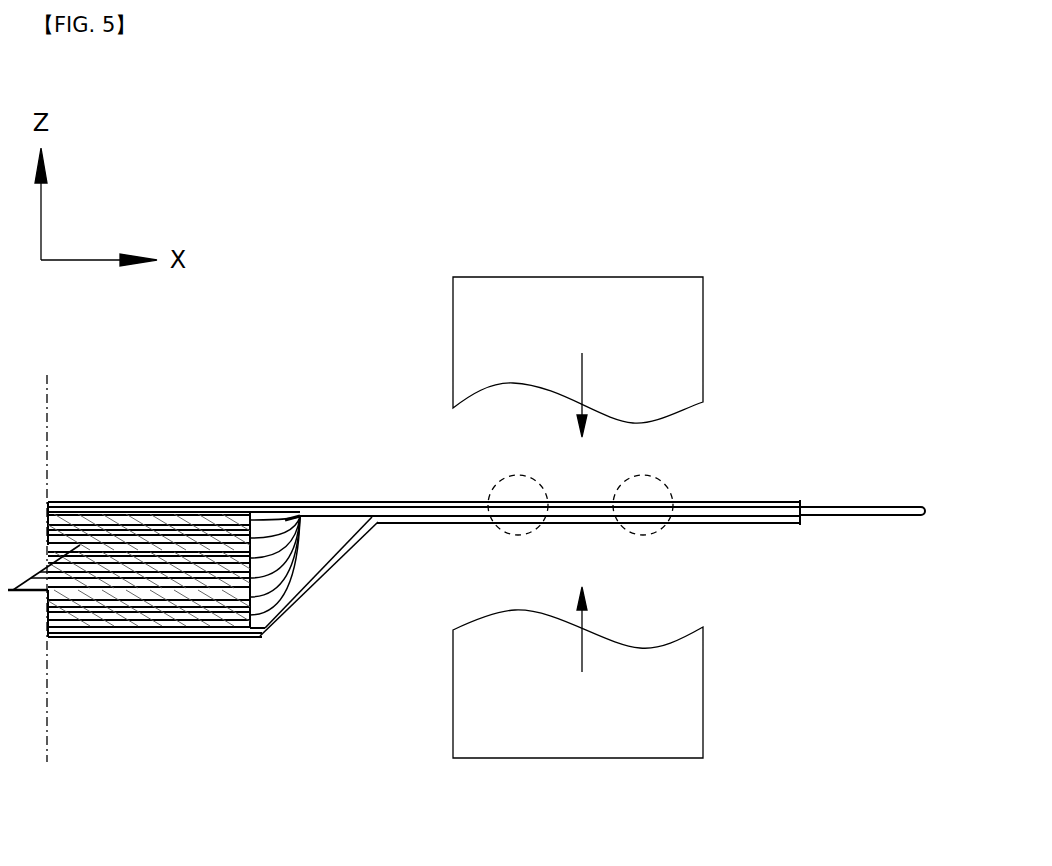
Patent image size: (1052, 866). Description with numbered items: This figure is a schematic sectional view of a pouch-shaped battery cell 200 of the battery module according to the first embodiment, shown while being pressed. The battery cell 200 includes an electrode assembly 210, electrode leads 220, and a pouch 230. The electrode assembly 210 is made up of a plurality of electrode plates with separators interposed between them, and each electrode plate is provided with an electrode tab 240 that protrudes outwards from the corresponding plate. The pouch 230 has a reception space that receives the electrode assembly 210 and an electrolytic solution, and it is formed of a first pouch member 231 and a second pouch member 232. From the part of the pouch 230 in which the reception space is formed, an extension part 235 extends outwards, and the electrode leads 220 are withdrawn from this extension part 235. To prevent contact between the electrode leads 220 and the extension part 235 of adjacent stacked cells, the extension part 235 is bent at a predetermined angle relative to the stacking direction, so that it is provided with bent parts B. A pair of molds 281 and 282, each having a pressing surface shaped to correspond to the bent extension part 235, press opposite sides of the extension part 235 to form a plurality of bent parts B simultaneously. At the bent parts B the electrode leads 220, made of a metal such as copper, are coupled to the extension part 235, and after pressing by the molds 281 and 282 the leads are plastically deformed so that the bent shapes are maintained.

The battery cell 200 is at (293, 242).
The electrode assembly 210 is at (210, 618).
The electrode lead 220 is at (865, 512).
The pouch 230 is at (114, 485).
The first pouch member 231 is at (163, 502).
The second pouch member 232 is at (135, 635).
The extension part 235 is at (783, 502).
The electrode tab 240 is at (266, 517).
The mold 281 is at (610, 320).
The mold 282 is at (612, 725).
The bent part B is at (500, 534).